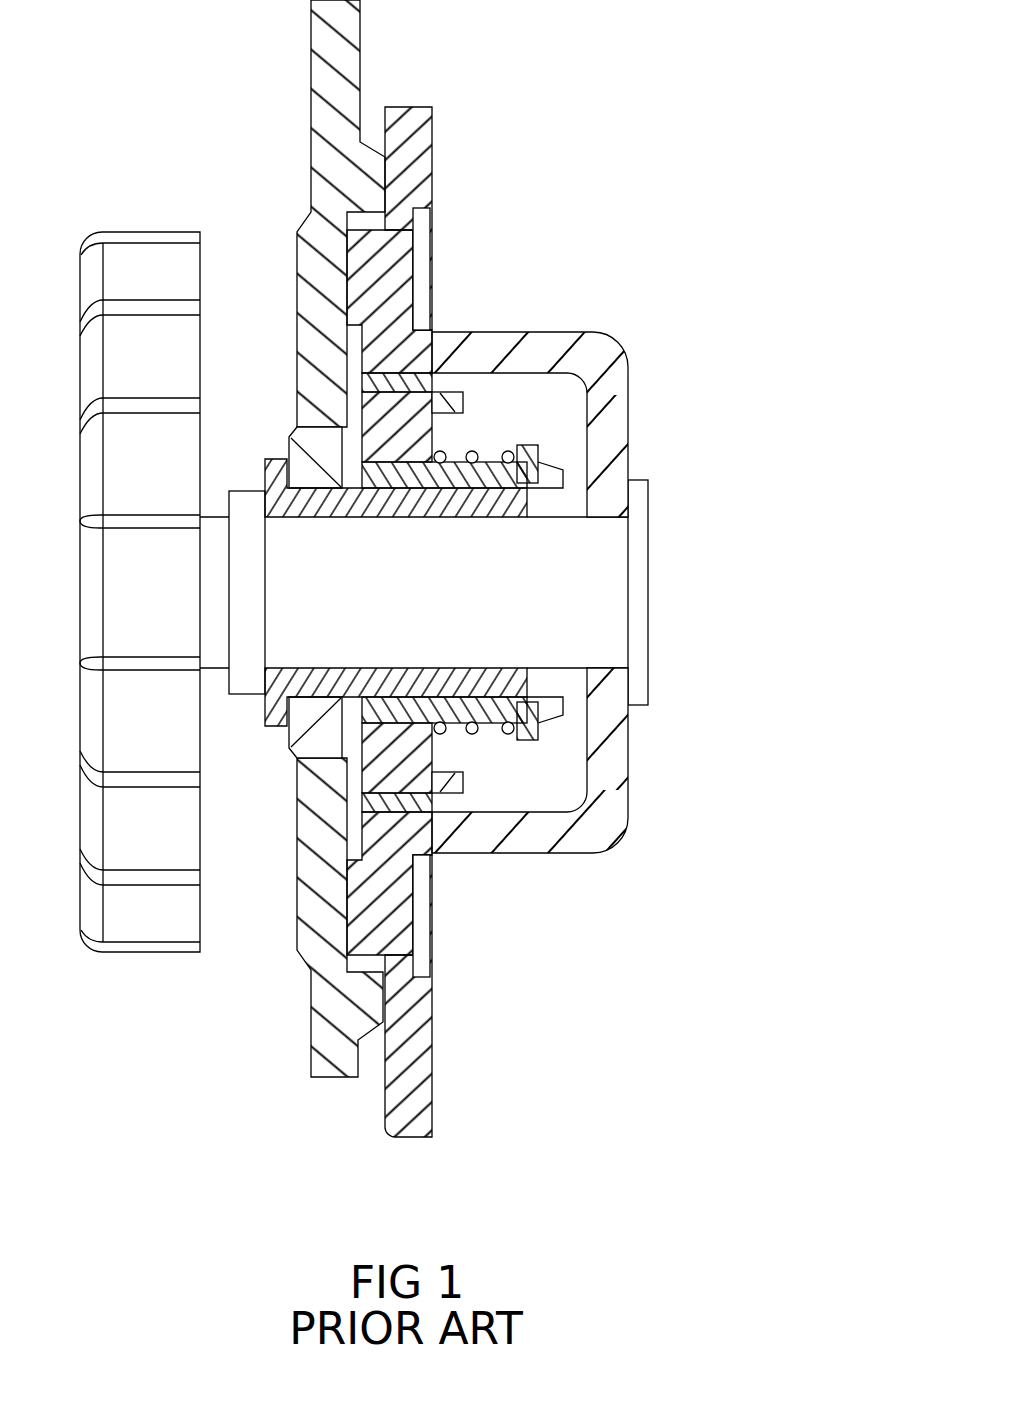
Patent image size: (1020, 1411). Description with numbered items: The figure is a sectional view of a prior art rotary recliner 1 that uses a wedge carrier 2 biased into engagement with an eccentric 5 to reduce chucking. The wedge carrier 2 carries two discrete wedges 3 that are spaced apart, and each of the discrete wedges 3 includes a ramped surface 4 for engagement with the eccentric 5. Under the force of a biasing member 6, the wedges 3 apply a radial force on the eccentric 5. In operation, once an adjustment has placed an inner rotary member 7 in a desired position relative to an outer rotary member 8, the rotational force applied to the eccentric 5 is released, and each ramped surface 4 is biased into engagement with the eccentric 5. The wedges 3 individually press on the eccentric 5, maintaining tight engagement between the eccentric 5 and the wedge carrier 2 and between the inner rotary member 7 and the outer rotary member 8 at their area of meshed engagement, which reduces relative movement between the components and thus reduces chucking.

The rotary recliner 1 is at (438, 568).
The wedge carrier 2 is at (543, 452).
The discrete wedges 3 is at (373, 472).
The ramped surface 4 is at (345, 465).
The eccentric 5 is at (437, 433).
The biasing member 6 is at (508, 726).
The inner rotary member 7 is at (400, 905).
The outer rotary member 8 is at (310, 1066).